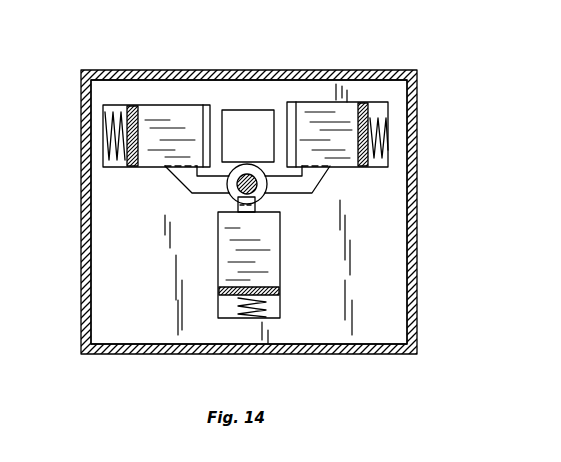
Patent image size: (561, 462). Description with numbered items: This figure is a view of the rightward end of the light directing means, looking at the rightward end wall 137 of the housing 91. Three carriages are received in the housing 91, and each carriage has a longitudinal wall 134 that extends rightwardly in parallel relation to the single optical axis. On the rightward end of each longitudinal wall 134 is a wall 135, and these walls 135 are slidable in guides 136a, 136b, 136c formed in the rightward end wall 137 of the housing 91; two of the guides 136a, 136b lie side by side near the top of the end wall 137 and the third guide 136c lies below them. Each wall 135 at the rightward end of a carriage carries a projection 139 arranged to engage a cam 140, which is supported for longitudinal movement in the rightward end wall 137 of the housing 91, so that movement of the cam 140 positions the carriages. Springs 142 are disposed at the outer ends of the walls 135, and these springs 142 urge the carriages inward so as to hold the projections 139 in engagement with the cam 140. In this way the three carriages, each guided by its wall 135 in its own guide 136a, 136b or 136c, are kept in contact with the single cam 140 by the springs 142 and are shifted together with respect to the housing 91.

The housing 91 is at (139, 72).
The longitudinal wall 134 is at (137, 122).
The wall 135 is at (343, 110).
The guide 136a is at (314, 102).
The guide 136b is at (192, 104).
The guide 136c is at (218, 310).
The rightward end wall 137 is at (382, 197).
The projection 139 is at (183, 180).
The cam 140 is at (230, 190).
The spring 142 is at (113, 126).